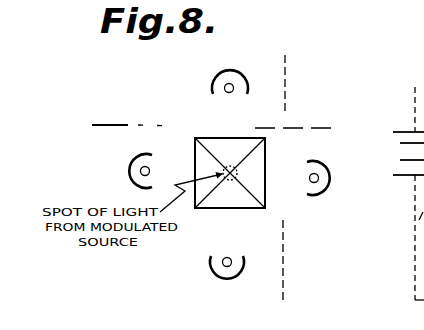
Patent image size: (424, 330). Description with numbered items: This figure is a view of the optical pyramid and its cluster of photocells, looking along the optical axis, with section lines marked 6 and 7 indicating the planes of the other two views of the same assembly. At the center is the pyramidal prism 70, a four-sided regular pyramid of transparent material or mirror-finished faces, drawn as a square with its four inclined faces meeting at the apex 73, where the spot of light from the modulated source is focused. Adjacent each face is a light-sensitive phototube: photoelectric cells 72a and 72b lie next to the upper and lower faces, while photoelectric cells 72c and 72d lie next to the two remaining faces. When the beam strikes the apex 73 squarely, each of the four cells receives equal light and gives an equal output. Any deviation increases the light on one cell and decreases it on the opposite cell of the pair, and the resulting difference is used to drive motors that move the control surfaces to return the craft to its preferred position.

The pyramidal prism 70 is at (268, 146).
The apex 73 is at (231, 170).
The photoelectric cell 72a is at (221, 78).
The photoelectric cell 72b is at (216, 250).
The photoelectric cell 72c is at (130, 180).
The photoelectric cell 72d is at (372, 202).
The section line 6- 6 is at (265, 68).
The section line 7- 7 is at (101, 108).